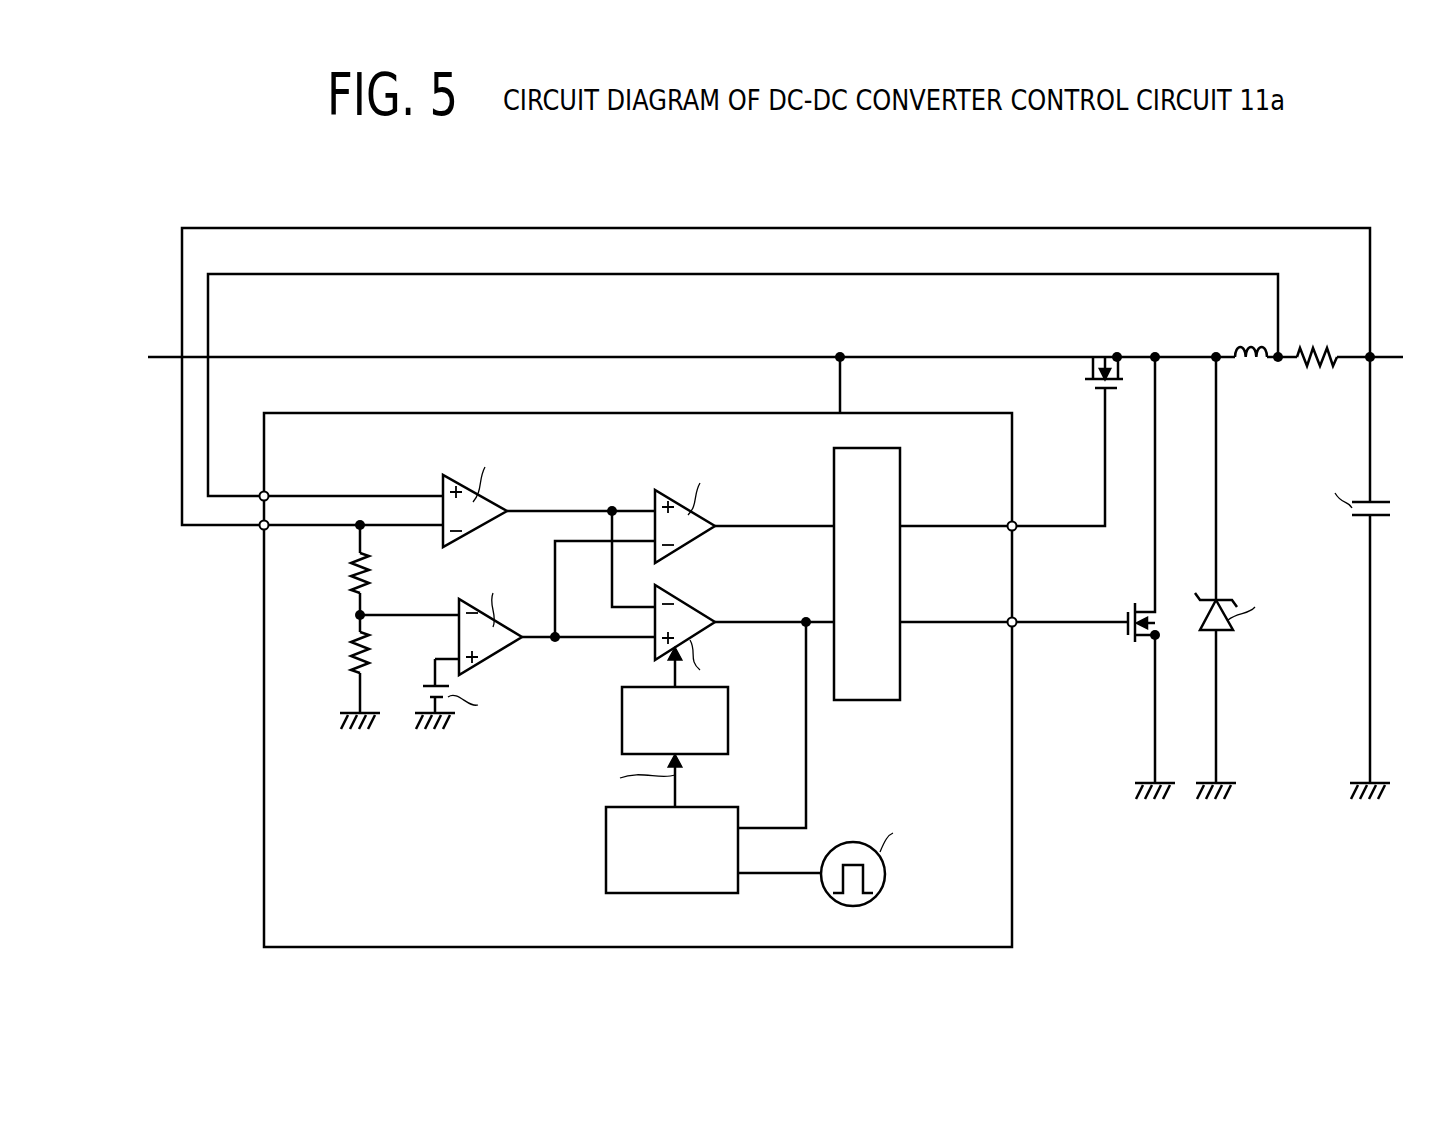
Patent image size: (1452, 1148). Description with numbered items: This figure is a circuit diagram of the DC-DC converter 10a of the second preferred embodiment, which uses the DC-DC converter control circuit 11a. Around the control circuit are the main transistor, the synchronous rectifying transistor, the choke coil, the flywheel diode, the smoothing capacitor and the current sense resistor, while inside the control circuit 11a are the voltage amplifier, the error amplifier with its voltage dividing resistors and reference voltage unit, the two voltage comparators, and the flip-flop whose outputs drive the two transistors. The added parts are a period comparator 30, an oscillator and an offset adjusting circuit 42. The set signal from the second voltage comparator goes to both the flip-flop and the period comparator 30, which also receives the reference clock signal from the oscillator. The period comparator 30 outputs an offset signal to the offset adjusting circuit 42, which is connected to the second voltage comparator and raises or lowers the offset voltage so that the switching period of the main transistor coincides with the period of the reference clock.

The DC-DC converter 10a is at (1028, 205).
The DC-DC converter control circuit 11a is at (940, 413).
The period comparator 30 is at (606, 863).
The offset adjusting circuit 42 is at (728, 745).